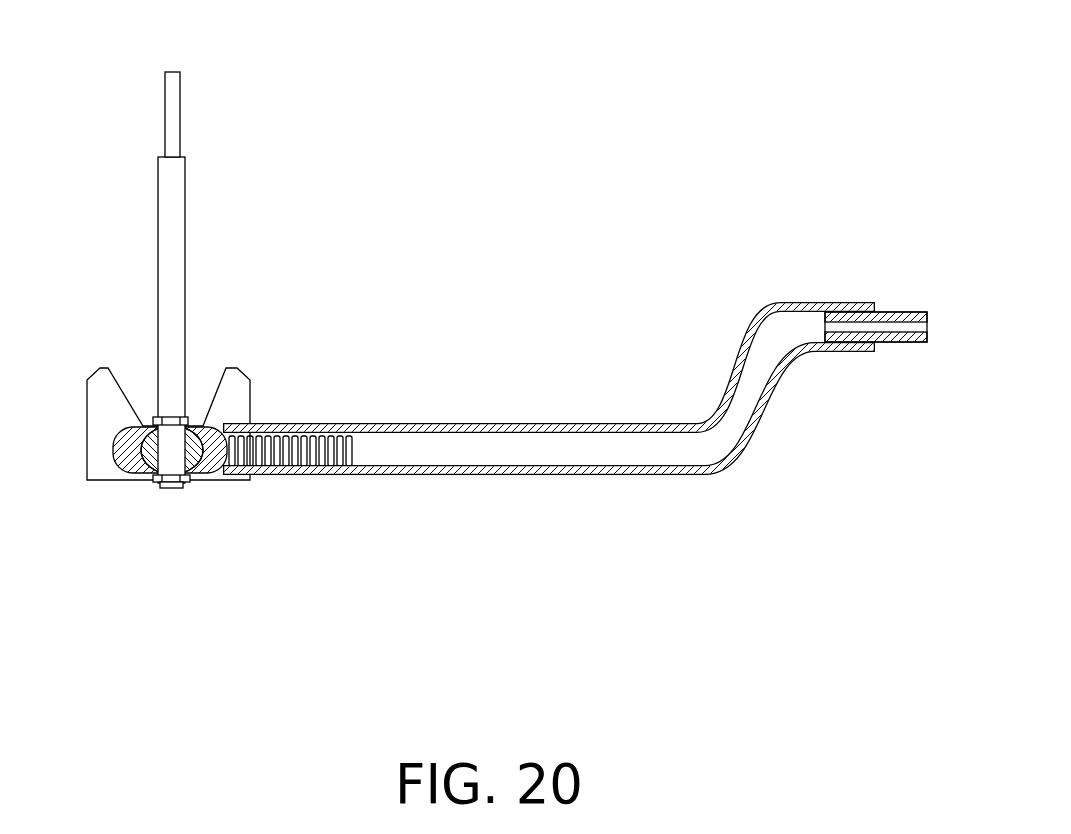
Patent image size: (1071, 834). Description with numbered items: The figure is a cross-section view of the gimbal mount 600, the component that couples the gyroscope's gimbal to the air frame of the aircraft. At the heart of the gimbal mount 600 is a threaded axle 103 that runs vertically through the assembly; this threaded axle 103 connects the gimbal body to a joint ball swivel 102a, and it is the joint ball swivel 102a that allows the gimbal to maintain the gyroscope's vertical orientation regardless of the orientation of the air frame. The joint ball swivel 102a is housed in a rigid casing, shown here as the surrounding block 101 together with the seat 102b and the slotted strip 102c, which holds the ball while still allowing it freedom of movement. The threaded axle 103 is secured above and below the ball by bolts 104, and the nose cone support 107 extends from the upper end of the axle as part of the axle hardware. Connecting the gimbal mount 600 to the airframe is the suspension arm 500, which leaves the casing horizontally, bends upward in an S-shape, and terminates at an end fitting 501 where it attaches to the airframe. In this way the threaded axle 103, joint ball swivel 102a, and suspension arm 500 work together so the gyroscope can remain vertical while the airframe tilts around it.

The gimbal mount 600 is at (90, 54).
The mounting block 101 is at (100, 415).
The joint ball swivel 102a is at (190, 456).
The ball seat pillow 102b is at (120, 462).
The slotted strip 102c is at (283, 447).
The threaded axle 103 is at (175, 295).
The bolts 104 is at (183, 418).
The nose cone support 107 is at (170, 127).
The suspension arm 500 is at (540, 455).
The bracket end insert 501 is at (860, 330).